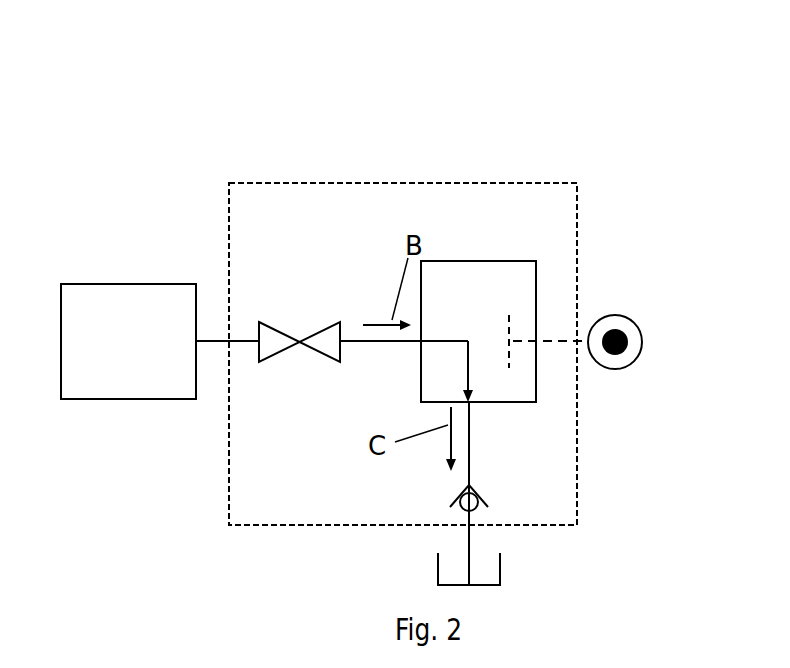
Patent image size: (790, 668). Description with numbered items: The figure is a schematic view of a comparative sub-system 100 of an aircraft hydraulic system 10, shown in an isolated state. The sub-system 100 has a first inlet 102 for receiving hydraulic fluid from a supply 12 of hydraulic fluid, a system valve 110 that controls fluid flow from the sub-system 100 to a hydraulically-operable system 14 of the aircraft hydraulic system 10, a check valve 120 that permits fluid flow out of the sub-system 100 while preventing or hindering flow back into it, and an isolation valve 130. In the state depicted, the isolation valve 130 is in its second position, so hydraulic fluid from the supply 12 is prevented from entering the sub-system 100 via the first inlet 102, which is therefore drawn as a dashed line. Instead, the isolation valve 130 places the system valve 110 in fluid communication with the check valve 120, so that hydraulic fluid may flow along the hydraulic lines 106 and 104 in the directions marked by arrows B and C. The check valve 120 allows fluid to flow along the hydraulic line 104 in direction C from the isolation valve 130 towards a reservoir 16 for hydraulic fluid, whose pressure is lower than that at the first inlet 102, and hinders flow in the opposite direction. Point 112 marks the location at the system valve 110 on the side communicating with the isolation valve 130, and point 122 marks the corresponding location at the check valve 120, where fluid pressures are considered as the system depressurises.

The aircraft hydraulic system 10 is at (290, 135).
The sub-system 100 is at (230, 182).
The hydraulically-operable system 14 is at (92, 284).
The system valve 110 is at (310, 335).
The point 112 is at (340, 320).
The hydraulic line 106 is at (365, 341).
The isolation valve 130 is at (465, 260).
The first inlet 102 is at (557, 337).
The supply of hydraulic fluid 12 is at (625, 315).
The hydraulic line 104 is at (468, 427).
The check valve 120 is at (457, 498).
The point 122 is at (469, 473).
The reservoir 16 is at (500, 563).